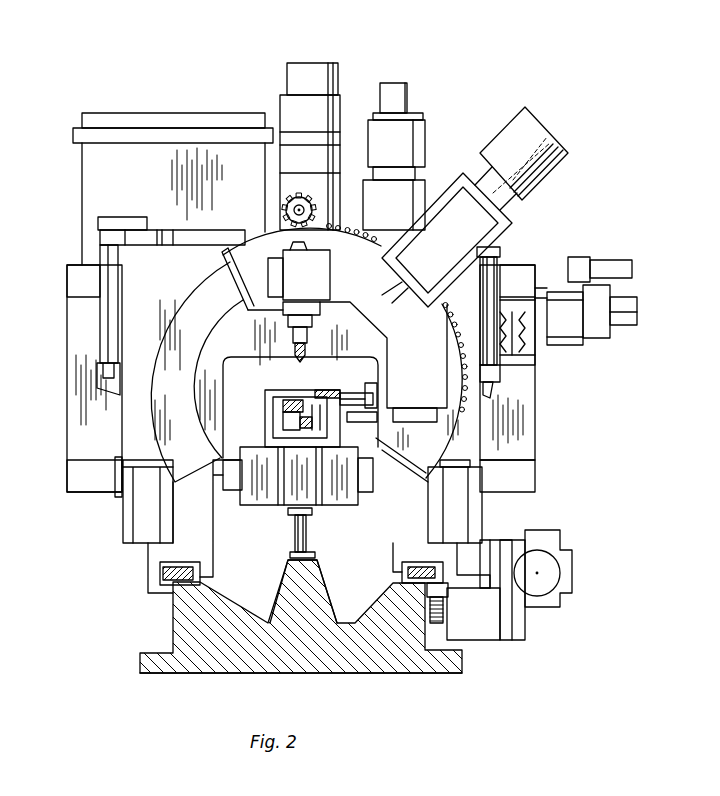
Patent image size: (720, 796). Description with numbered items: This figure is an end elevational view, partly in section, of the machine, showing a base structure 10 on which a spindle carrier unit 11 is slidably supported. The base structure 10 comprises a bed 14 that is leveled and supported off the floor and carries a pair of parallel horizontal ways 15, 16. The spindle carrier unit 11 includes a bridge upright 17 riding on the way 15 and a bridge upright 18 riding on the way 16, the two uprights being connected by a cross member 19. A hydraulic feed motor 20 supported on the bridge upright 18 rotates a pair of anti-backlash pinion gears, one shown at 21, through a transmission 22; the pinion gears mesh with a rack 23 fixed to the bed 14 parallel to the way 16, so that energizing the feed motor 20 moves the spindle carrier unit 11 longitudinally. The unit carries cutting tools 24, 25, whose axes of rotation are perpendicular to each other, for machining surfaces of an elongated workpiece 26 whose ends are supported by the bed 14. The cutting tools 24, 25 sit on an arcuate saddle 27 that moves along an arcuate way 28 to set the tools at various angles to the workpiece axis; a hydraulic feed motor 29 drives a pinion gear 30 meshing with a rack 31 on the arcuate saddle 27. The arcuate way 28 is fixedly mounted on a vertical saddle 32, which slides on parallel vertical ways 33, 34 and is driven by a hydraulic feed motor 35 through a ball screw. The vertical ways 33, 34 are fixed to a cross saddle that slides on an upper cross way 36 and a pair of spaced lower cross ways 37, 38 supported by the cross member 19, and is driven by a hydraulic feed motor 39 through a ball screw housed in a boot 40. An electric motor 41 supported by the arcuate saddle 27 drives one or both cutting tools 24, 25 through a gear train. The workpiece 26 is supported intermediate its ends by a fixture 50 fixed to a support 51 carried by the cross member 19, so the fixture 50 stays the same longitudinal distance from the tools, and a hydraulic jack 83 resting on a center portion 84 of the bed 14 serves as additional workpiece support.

The base structure 10 is at (220, 679).
The spindle carrier unit 11 is at (78, 190).
The bed 14 is at (403, 676).
The way 15 is at (160, 578).
The way 16 is at (402, 575).
The bridge upright 17 is at (148, 554).
The bridge upright 18 is at (395, 553).
The cross member 19 is at (68, 380).
The hydraulic feed motor 20 is at (560, 577).
The anti-backlash pinion gear 21 is at (447, 626).
The transmission 22 is at (505, 640).
The rack 23 is at (445, 602).
The cutting tool 24 is at (295, 352).
The cutting tool 25 is at (342, 396).
The elongated workpiece 26 is at (272, 400).
The arcuate saddle 27 is at (256, 238).
The arcuate way 28 is at (168, 376).
The hydraulic feed motor 29 is at (289, 63).
The pinion gear 30 is at (300, 193).
The rack 31 is at (443, 312).
The vertical saddle 32 is at (117, 326).
The vertical way 33 is at (135, 525).
The vertical way 34 is at (462, 517).
The hydraulic feed motor 35 is at (405, 95).
The upper cross way 36 is at (68, 280).
The lower cross way 37 is at (68, 480).
The lower cross way 38 is at (533, 482).
The hydraulic feed motor 39 is at (603, 338).
The boot 40 is at (528, 337).
The electric motor 41 is at (540, 133).
The fixture 50 is at (298, 389).
The support 51 is at (271, 504).
The hydraulic jack 83 is at (312, 535).
The center portion 84 is at (288, 565).